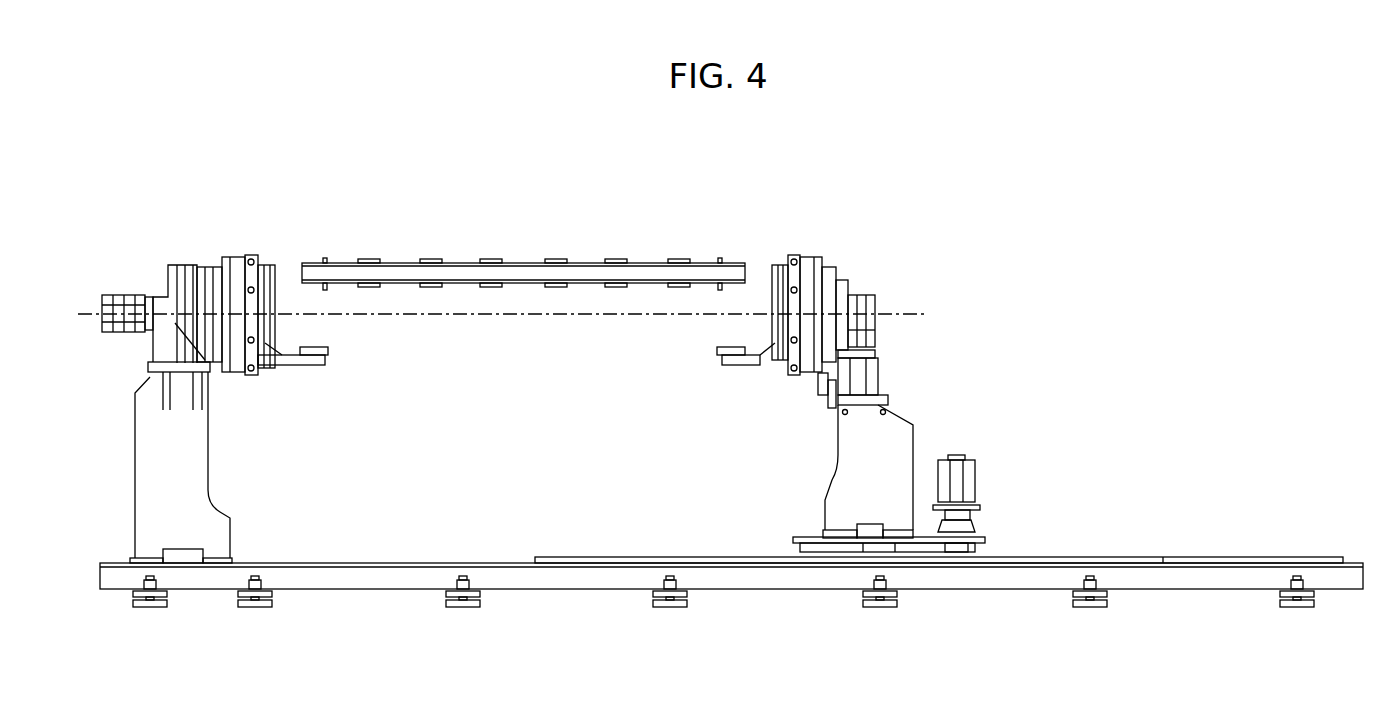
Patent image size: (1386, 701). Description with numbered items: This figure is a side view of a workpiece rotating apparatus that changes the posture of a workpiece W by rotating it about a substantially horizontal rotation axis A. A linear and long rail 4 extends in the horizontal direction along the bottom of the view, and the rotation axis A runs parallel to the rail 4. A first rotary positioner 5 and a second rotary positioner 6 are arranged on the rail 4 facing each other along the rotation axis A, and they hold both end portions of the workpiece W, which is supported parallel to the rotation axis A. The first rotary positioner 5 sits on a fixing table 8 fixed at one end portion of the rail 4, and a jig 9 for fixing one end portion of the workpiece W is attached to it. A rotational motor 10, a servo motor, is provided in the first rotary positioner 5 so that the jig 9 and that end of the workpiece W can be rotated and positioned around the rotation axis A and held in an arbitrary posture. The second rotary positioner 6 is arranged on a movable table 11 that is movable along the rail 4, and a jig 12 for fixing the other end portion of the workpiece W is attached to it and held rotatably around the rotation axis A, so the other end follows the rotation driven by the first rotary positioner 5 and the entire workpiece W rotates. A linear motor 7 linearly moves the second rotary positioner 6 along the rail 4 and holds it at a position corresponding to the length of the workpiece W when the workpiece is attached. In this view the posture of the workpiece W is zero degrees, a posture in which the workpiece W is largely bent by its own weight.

The rail 4 is at (1138, 563).
The first rotary positioner 5 is at (188, 250).
The second rotary positioner 6 is at (875, 273).
The linear motor 7 is at (978, 478).
The fixing table 8 is at (135, 463).
The jig 9 is at (290, 368).
The rotational motor 10 is at (127, 295).
The movable table 11 is at (915, 410).
The jig 12 is at (752, 366).
The workpiece W is at (520, 273).
The rotation axis A is at (513, 314).